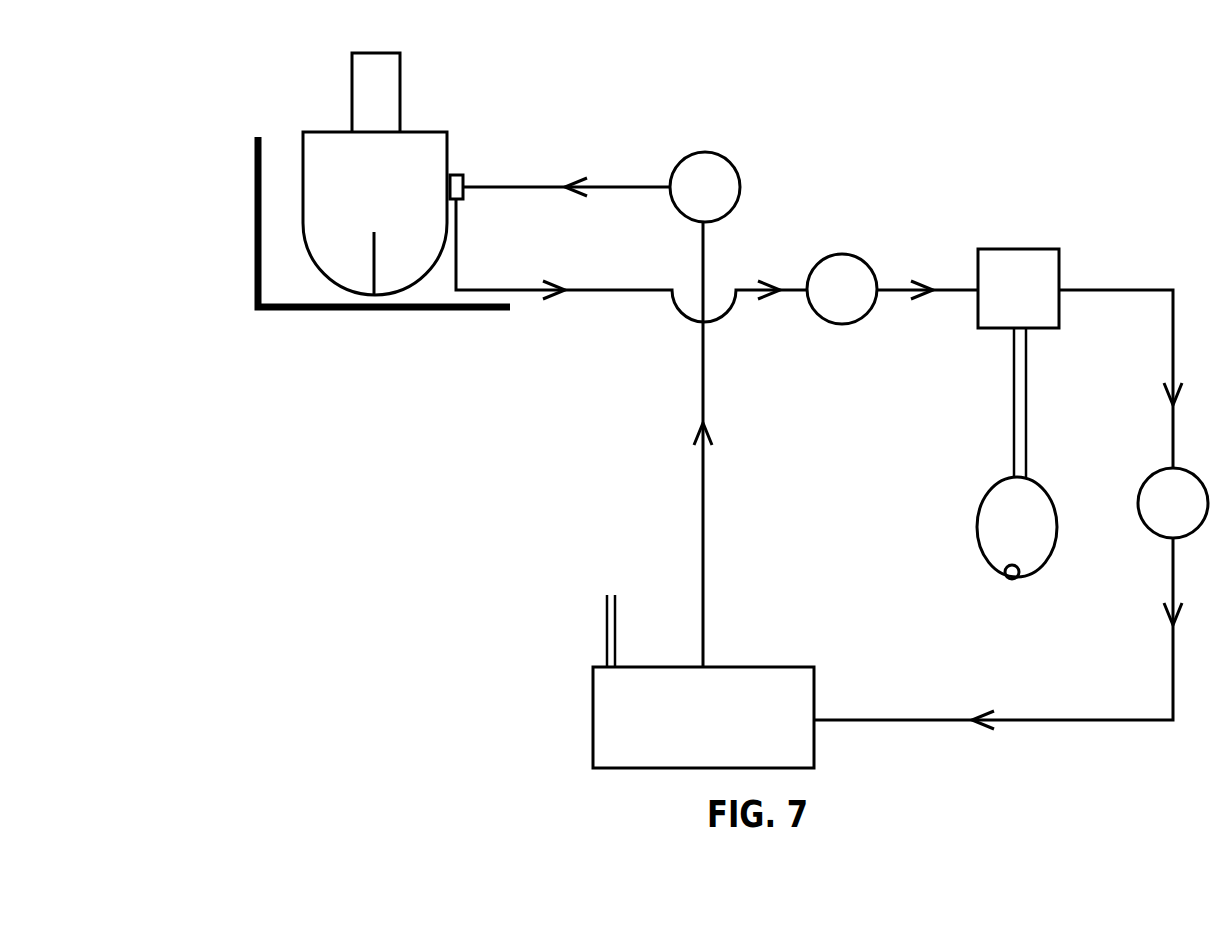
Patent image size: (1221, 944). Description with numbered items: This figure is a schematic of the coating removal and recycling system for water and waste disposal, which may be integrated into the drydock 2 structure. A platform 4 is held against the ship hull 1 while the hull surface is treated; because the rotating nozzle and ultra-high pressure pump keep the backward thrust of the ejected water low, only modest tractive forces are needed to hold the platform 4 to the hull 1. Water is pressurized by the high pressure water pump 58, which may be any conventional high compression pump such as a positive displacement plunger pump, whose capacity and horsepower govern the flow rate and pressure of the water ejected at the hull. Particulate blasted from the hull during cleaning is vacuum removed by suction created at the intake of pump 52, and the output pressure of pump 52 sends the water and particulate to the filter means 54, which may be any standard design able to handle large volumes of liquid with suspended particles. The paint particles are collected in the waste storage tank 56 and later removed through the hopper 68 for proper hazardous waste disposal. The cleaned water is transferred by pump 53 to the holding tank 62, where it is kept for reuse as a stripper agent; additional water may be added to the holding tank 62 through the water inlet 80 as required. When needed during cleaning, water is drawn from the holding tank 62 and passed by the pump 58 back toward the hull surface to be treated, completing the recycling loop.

The hull 1 is at (307, 253).
The drydock 2 is at (255, 165).
The platform 4 is at (463, 175).
The pump 52 is at (842, 289).
The pump 53 is at (1173, 503).
The filter means 54 is at (1018, 363).
The waste storage tank 56 is at (1017, 527).
The high pressure water pump 58 is at (705, 187).
The holding tank 62 is at (703, 717).
The hopper 68 is at (1005, 575).
The water inlet 80 is at (607, 612).